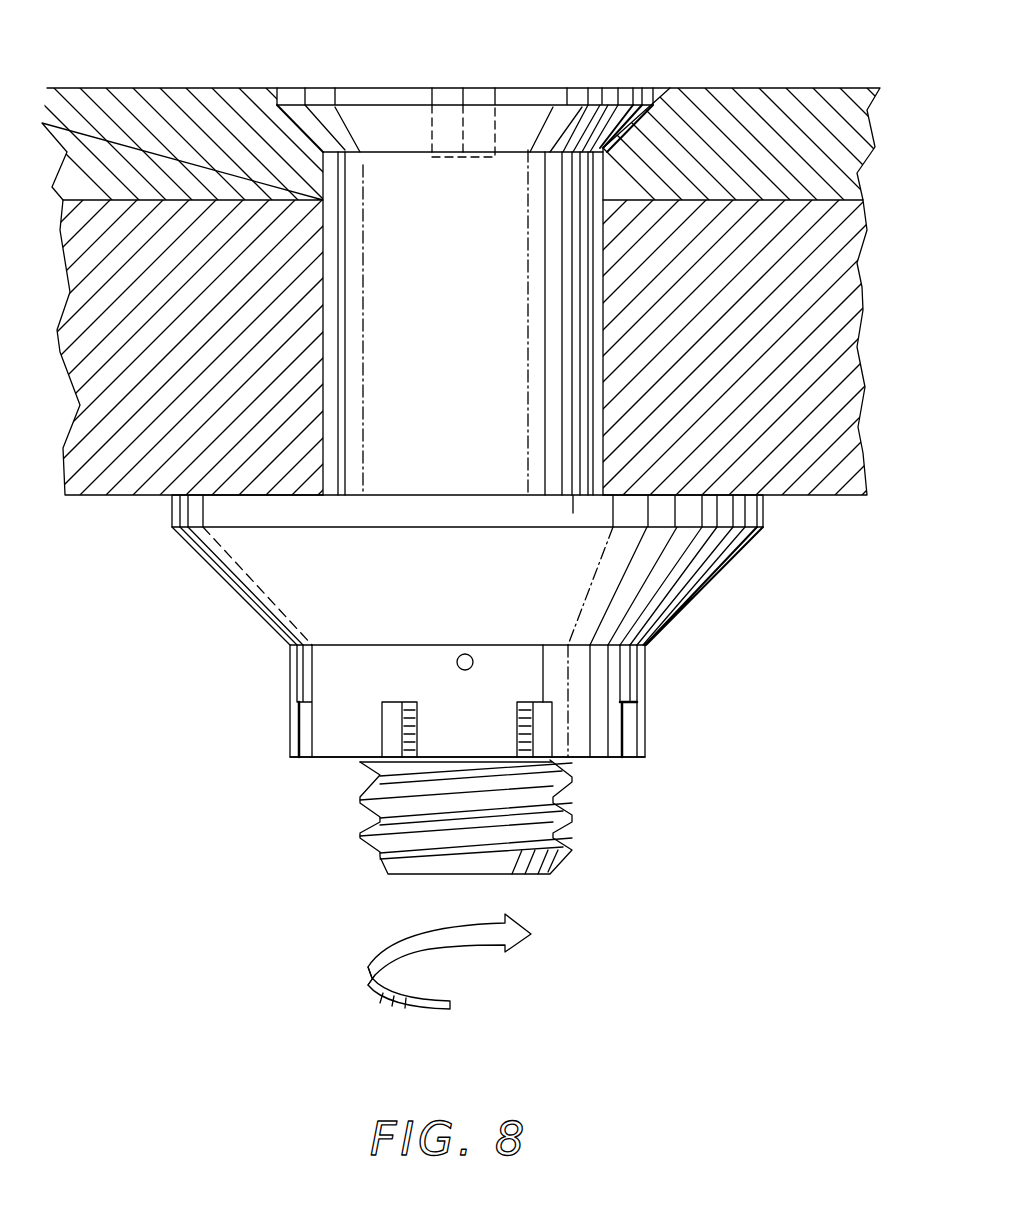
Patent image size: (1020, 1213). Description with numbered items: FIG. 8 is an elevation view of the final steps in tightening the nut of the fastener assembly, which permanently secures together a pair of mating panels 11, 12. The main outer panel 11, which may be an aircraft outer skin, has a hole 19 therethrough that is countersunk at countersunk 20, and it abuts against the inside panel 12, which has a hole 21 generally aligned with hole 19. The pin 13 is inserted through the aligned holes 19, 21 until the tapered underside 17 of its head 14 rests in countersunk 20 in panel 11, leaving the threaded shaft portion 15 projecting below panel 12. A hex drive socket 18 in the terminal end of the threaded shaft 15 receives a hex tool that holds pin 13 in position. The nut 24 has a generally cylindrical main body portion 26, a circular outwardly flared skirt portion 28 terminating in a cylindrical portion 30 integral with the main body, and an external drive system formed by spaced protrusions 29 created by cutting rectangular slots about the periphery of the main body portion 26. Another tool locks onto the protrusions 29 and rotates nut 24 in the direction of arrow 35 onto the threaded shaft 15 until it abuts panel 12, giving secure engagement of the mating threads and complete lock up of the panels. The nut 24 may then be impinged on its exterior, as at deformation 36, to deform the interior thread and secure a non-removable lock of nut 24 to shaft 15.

The main outer panel 11 is at (127, 123).
The inside panel 12 is at (75, 458).
The pin 13 is at (597, 237).
The head 14 is at (560, 87).
The threaded shaft portion 15 is at (573, 810).
The tapered underside 17 is at (598, 117).
The hex drive socket 18 is at (500, 122).
The hole 19 is at (323, 182).
The countersunk 20 is at (300, 132).
The hole 21 is at (325, 257).
The nut 24 is at (680, 700).
The main body portion 26 is at (315, 670).
The outwardly flared skirt portion 28 is at (685, 583).
The protrusions 29 is at (335, 762).
The cylindrical portion 30 is at (763, 505).
The arrow 35 is at (450, 947).
The deformation 36 is at (456, 660).